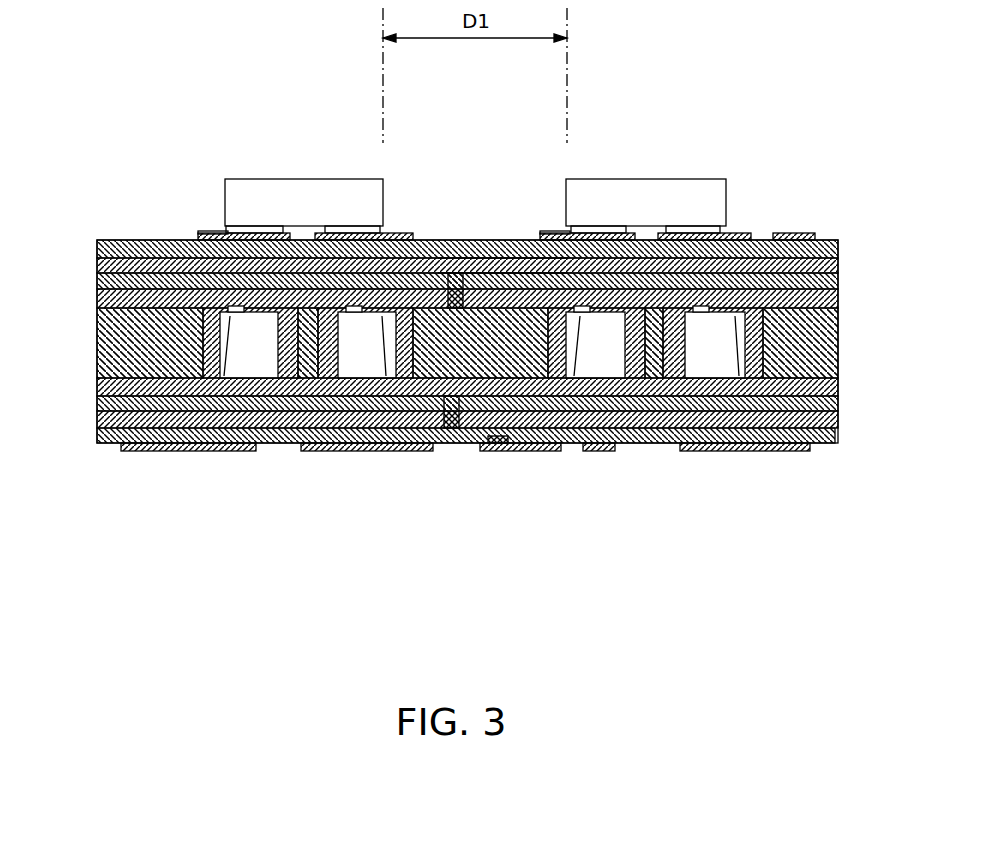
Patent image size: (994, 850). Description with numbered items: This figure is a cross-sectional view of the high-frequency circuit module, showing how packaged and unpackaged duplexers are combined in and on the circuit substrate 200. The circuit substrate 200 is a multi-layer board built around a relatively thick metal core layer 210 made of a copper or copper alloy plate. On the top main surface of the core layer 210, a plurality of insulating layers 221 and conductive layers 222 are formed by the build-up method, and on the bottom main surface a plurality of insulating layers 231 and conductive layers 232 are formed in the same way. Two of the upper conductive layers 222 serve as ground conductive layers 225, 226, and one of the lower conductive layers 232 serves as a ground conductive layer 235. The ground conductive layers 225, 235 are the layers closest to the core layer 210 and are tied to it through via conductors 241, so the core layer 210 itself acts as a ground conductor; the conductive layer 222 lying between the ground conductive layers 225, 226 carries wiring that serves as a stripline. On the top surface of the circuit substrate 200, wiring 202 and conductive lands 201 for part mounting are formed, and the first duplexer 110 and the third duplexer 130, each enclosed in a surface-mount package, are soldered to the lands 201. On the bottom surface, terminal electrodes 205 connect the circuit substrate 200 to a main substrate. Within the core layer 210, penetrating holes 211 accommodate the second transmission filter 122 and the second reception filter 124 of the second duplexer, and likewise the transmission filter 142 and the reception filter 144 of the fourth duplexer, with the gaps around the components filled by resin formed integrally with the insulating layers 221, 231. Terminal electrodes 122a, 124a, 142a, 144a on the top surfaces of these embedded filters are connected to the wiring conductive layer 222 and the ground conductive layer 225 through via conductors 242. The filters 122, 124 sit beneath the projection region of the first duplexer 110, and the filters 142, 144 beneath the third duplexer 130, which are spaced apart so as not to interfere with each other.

The circuit substrate 200 is at (163, 232).
The conductive layers 222 is at (124, 233).
The insulating layers 221 is at (89, 291).
The core layer 210 is at (89, 334).
The insulating layers 231 is at (89, 414).
The conductive layers 232 is at (105, 434).
The terminal electrodes 205 is at (175, 443).
The penetrating holes 211 is at (212, 443).
The via conductors 241 is at (447, 268).
The ground conductive layer 235 is at (490, 436).
The ground conductive layer 225 is at (450, 250).
The ground conductive layer 226 is at (497, 263).
The via conductors 242 is at (245, 226).
The wiring 202 is at (790, 225).
The conductive lands 201 is at (198, 224).
The third duplexer 130 is at (297, 171).
The first duplexer 110 is at (640, 171).
The reception filter 144 is at (255, 368).
The terminal electrode 144a is at (222, 310).
The transmission filter 142 is at (353, 366).
The terminal electrode 142a is at (374, 310).
The second reception filter 124 is at (600, 366).
The terminal electrode 124a is at (572, 310).
The second transmission filter 122 is at (700, 366).
The terminal electrode 122a is at (727, 310).